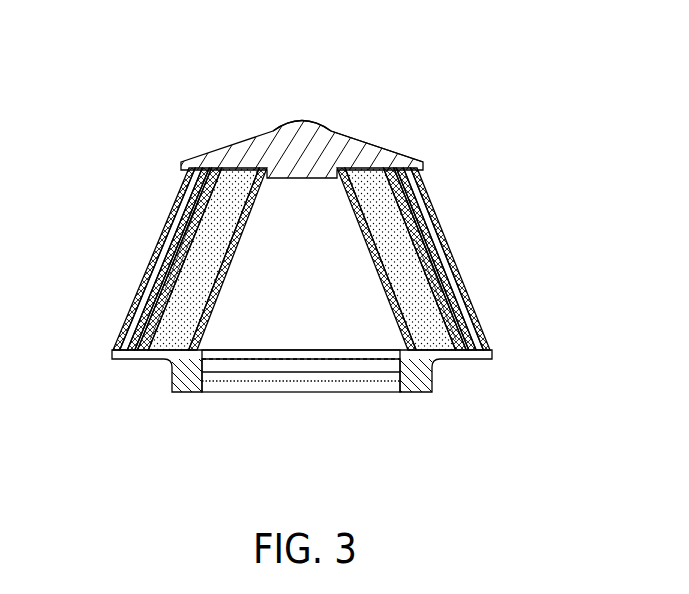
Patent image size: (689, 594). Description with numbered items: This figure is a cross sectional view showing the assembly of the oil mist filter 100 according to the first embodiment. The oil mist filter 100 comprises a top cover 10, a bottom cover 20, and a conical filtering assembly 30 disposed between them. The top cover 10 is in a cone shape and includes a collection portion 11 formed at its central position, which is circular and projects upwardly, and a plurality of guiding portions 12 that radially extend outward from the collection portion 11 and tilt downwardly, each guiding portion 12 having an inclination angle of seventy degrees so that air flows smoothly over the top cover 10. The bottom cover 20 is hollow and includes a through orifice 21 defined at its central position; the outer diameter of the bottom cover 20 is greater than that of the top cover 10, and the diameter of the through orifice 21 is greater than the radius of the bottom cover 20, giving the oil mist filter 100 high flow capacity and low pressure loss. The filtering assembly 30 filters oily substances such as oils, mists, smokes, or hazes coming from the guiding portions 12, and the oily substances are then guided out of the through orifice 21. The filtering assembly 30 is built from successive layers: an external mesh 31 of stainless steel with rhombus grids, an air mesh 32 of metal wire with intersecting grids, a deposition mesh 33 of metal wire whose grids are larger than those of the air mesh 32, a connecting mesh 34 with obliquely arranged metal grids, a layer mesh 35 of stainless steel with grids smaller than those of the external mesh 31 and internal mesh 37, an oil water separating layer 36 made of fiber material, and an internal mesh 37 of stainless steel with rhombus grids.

The oil mist filter 100 is at (313, 256).
The top cover 10 is at (304, 105).
The collection portion 11 is at (302, 120).
The guiding portion 12 is at (367, 143).
The bottom cover 20 is at (277, 419).
The through orifice 21 is at (313, 383).
The filtering assembly 30 is at (437, 251).
The external mesh 31 is at (172, 212).
The air mesh 32 is at (165, 243).
The deposition mesh 33 is at (148, 282).
The connecting mesh 34 is at (132, 317).
The layer mesh 35 is at (445, 238).
The oil water separating layer 36 is at (460, 282).
The internal mesh 37 is at (475, 317).